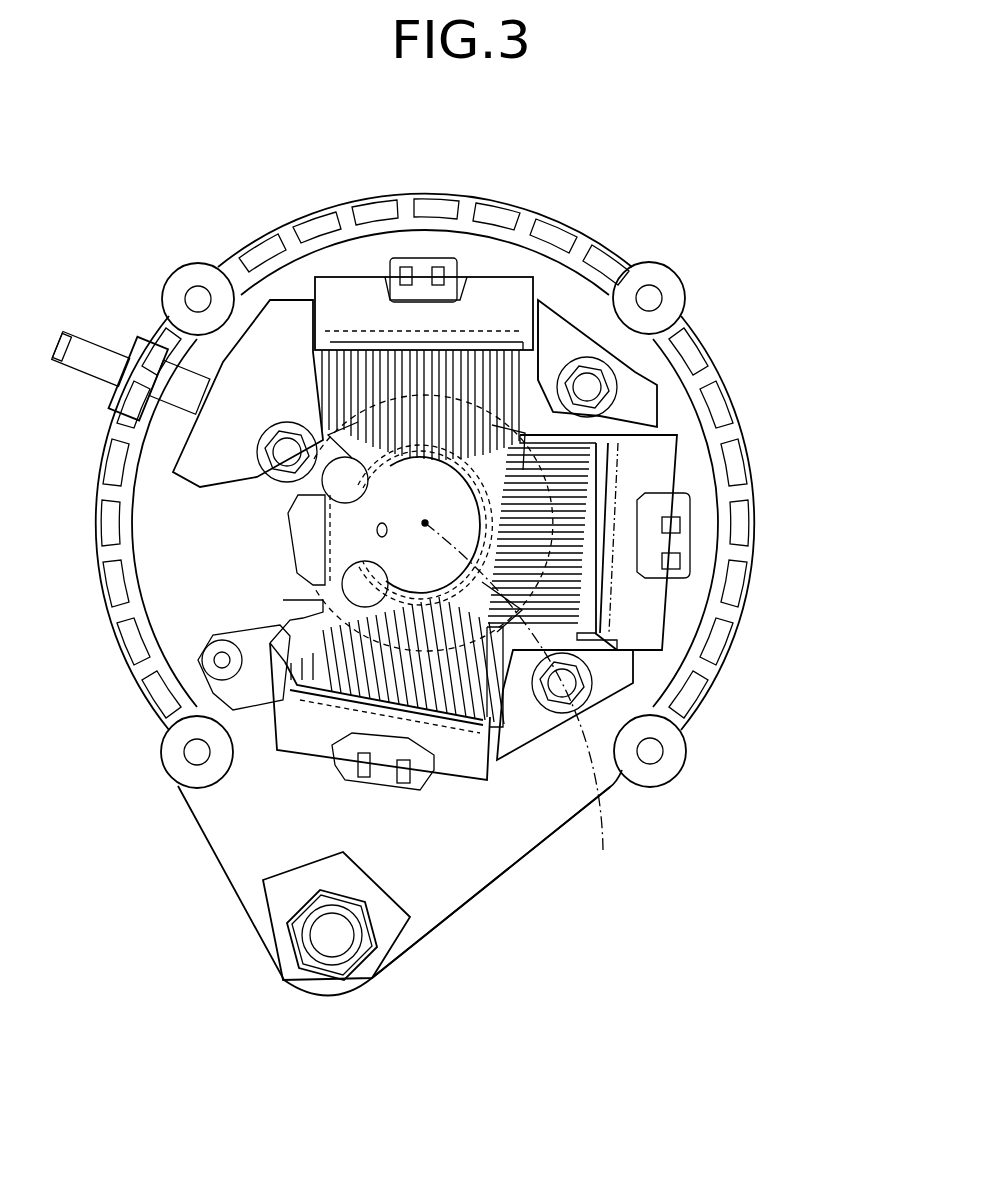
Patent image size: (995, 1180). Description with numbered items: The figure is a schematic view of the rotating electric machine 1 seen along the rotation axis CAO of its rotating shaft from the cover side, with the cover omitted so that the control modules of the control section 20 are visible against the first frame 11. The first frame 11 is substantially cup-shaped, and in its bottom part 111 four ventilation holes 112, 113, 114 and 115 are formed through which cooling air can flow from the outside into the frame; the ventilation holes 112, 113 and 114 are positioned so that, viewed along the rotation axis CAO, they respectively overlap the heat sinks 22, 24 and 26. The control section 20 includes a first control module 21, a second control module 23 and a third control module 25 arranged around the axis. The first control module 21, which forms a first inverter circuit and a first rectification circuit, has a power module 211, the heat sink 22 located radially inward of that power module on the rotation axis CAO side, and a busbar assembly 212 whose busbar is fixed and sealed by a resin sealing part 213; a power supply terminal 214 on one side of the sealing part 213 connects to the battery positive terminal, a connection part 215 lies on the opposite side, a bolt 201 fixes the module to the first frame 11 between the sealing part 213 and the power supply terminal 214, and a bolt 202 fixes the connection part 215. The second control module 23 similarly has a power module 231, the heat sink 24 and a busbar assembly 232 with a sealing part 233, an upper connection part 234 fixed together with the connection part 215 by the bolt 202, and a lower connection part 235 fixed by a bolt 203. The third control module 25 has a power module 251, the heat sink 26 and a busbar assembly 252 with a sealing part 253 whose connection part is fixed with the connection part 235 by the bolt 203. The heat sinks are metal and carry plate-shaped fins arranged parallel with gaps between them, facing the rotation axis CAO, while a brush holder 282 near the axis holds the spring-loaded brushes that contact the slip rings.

The rotating electric machine 1 is at (674, 204).
The first frame 11 is at (195, 248).
The bottom part 111 is at (608, 293).
The ventilation hole 112 is at (287, 450).
The ventilation hole 113 is at (640, 413).
The ventilation hole 114 is at (407, 820).
The ventilation hole 115 is at (357, 607).
The control section 20 is at (651, 349).
The bolt 201 is at (197, 300).
The bolt 202 is at (587, 385).
The bolt 203 is at (662, 745).
The first control module 21 is at (386, 248).
The power module 211 is at (365, 335).
The busbar assembly 212 is at (486, 262).
The sealing part 213 is at (338, 302).
The power supply terminal 214 is at (107, 362).
The connection part 215 is at (567, 343).
The heat sink 22 is at (433, 357).
The second control module 23 is at (702, 530).
The power module 231 is at (613, 538).
The busbar assembly 232 is at (663, 535).
The sealing part 233 is at (623, 590).
The connection part 234 is at (510, 450).
The connection part 235 is at (607, 687).
The heat sink 24 is at (602, 538).
The third control module 25 is at (426, 791).
The power module 251 is at (390, 716).
The busbar assembly 252 is at (383, 761).
The sealing part 253 is at (277, 652).
The heat sink 26 is at (495, 677).
The brush holder 282 is at (320, 582).
The rotation axis CAO is at (525, 705).